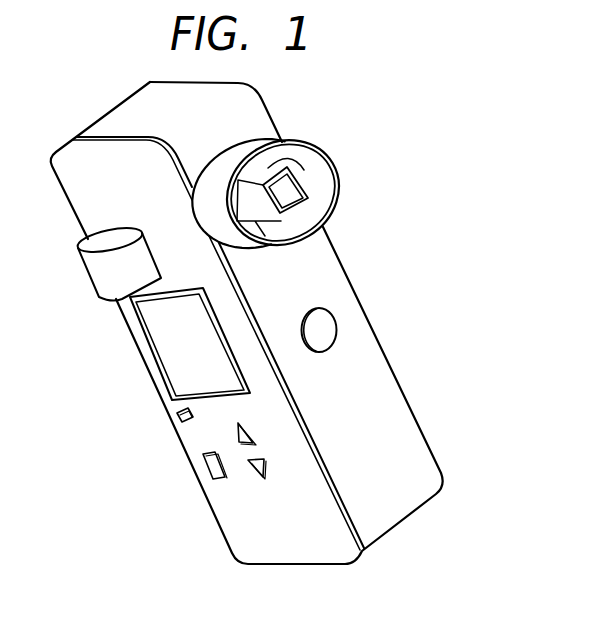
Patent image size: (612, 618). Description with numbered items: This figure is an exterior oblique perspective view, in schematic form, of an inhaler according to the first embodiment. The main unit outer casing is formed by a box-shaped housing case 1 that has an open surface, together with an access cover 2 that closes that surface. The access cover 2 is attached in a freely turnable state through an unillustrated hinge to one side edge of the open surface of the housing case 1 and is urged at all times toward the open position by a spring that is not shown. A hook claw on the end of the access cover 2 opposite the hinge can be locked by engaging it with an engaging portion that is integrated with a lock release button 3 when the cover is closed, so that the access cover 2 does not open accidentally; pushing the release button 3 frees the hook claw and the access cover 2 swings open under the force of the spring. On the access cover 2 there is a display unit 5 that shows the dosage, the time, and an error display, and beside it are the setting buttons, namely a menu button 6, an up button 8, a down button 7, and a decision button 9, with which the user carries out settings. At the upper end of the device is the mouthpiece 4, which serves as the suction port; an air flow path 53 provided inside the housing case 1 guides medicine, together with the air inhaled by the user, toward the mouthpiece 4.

The housing case 1 is at (412, 452).
The access cover 2 is at (235, 530).
The lock release button 3 is at (328, 323).
The mouthpiece 4 is at (328, 172).
The air flow path 53 is at (305, 160).
The display unit 5 is at (167, 353).
The menu button 6 is at (177, 417).
The down button 7 is at (257, 466).
The up button 8 is at (240, 440).
The decision button 9 is at (207, 470).